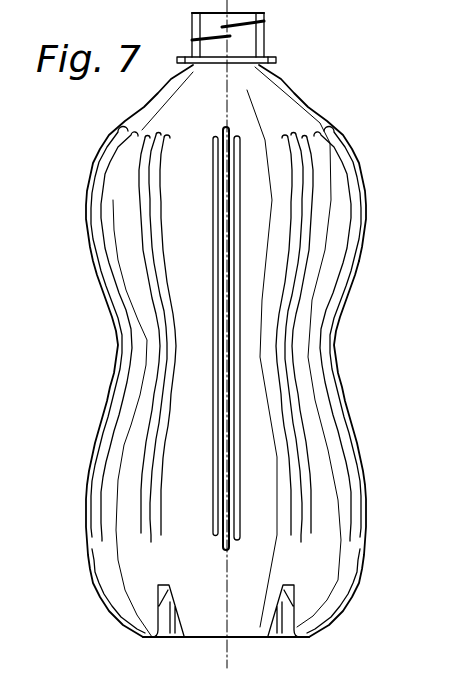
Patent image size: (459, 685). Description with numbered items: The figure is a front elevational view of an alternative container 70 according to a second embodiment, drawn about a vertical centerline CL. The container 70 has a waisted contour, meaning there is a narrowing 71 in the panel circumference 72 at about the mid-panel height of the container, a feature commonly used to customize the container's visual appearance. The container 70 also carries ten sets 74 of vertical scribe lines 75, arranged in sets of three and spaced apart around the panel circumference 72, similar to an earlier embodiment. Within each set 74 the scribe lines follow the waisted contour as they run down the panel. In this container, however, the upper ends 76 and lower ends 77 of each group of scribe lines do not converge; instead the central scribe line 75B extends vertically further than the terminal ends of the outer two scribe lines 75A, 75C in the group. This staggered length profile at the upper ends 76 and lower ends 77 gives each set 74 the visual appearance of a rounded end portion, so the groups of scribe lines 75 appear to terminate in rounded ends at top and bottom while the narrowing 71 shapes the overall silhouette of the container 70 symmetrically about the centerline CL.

The container 70 is at (343, 122).
The narrowing 71 is at (338, 337).
The panel circumference 72 is at (367, 190).
The sets of vertical scribe lines 74 is at (214, 403).
The vertical scribe lines 75 is at (174, 360).
The outer scribe line 75A is at (128, 529).
The central scribe line 75B is at (148, 541).
The outer scribe line 75C is at (160, 528).
The upper ends 76 is at (167, 128).
The lower ends 77 is at (152, 548).
The centerline CL is at (231, 650).